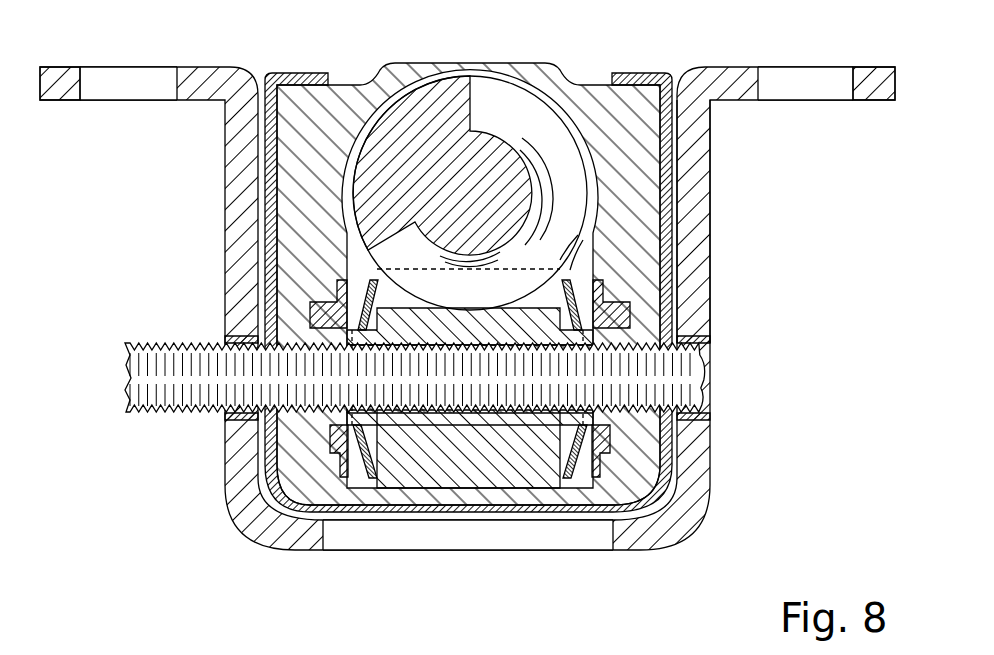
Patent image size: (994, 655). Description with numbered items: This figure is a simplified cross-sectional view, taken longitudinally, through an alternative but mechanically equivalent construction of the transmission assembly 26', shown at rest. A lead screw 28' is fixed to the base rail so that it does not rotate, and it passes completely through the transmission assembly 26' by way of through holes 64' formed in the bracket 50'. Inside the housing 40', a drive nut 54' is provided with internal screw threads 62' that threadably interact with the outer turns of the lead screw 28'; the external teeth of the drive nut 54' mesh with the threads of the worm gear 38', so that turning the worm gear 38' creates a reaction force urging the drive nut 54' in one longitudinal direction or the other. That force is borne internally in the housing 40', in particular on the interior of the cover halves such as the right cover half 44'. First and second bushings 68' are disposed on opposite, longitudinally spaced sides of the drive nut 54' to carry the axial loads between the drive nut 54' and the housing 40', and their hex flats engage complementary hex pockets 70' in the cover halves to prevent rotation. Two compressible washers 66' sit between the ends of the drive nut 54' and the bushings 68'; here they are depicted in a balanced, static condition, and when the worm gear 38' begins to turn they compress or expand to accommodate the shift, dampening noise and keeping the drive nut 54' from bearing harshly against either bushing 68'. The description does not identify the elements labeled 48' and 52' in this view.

The transmission assembly 26' is at (857, 151).
The lead screw 28' is at (412, 411).
The worm gear 38' is at (470, 155).
The housing 40' is at (467, 308).
The right cover half 44' is at (468, 252).
The inner liner 48' is at (523, 292).
The bracket 50' is at (753, 221).
The mounting flange 52' is at (467, 55).
The drive nut 54' is at (470, 465).
The internal screw threads 62' is at (410, 487).
The through holes 64' is at (446, 360).
The compressible washers 66' is at (469, 335).
The bushings 68' is at (517, 426).
The hex pockets 70' is at (449, 366).